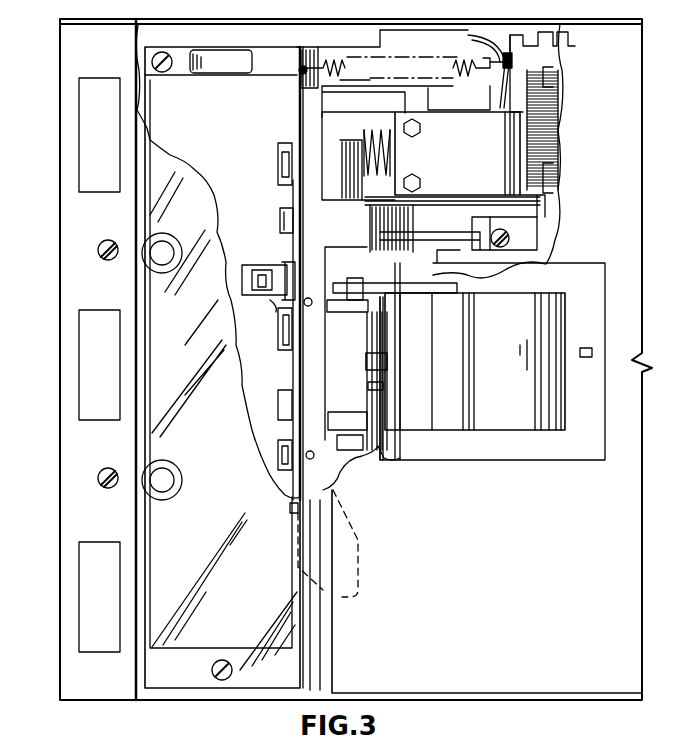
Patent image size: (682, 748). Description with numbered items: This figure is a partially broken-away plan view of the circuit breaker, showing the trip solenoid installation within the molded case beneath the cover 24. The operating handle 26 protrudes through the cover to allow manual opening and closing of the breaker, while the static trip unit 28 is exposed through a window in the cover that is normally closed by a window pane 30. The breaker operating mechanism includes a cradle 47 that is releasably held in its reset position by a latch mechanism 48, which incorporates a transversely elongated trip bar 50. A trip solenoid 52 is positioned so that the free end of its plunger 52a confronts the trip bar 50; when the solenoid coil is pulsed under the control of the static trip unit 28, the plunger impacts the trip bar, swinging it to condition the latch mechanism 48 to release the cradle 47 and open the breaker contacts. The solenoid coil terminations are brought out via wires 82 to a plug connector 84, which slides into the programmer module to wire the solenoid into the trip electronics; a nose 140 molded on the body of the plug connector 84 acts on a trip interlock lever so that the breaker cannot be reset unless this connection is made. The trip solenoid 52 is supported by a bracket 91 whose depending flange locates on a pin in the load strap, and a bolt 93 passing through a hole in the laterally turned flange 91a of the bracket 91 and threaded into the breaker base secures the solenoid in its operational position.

The cover 24 is at (491, 596).
The operating handle 26 is at (442, 417).
The static trip unit 28 is at (172, 103).
The window pane 30 is at (183, 670).
The cradle 47 is at (386, 362).
The latch mechanism 48 is at (375, 384).
The trip bar 50 is at (305, 365).
The trip solenoid 52 is at (468, 166).
The plunger 52a is at (362, 136).
The wires 82 is at (520, 80).
The plug connector 84 is at (258, 266).
The bracket 91 is at (513, 52).
The laterally turned flange 91a is at (532, 228).
The bolt 93 is at (500, 248).
The nose 140 is at (273, 312).